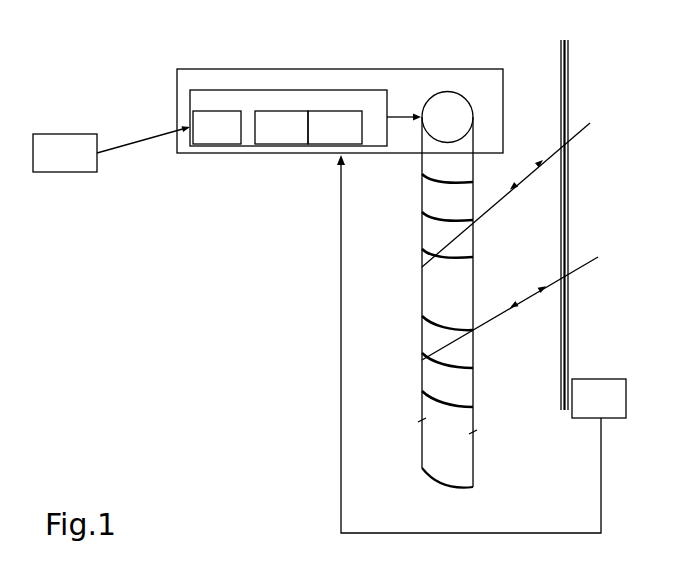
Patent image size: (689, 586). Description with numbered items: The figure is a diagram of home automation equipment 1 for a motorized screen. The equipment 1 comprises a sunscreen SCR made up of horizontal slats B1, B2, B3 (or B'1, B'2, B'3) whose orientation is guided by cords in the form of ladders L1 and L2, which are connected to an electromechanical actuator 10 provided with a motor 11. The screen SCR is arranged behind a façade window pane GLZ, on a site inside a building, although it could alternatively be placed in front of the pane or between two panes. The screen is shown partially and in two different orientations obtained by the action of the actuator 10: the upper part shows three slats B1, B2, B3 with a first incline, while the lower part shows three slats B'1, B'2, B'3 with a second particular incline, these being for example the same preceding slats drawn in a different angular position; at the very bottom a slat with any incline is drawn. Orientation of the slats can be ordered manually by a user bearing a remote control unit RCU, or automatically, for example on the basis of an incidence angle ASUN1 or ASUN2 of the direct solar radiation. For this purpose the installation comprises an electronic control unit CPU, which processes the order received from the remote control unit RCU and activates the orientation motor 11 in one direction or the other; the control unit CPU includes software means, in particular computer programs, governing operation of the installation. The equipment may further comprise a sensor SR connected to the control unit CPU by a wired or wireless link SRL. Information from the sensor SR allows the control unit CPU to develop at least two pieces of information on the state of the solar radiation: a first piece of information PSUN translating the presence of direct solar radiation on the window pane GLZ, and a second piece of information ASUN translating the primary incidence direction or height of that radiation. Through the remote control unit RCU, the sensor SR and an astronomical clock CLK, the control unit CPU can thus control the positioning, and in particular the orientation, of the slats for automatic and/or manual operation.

The home automation equipment 1 is at (112, 90).
The electromechanical actuator 10 is at (347, 66).
The motor 11 is at (443, 100).
The remote control unit RCU is at (65, 153).
The electronic control unit CPU is at (288, 110).
The astronomical clock CLK is at (217, 127).
The first piece of information PSUN is at (281, 127).
The second piece of information ASUN is at (335, 127).
The ladder cord L1 is at (476, 470).
The ladder cord L2 is at (422, 448).
The horizontal slat B3 is at (427, 176).
The horizontal slat B2 is at (427, 221).
The horizontal slat B1 is at (422, 267).
The horizontal slat B'3 is at (430, 314).
The horizontal slat B'2 is at (430, 356).
The horizontal slat B'1 is at (430, 397).
The façade window pane GLZ is at (560, 63).
The incidence angle ASUN1 is at (567, 145).
The incidence angle ASUN2 is at (567, 277).
The sensor SR is at (599, 398).
The link SRL is at (341, 407).
The sunscreen SCR is at (360, 284).